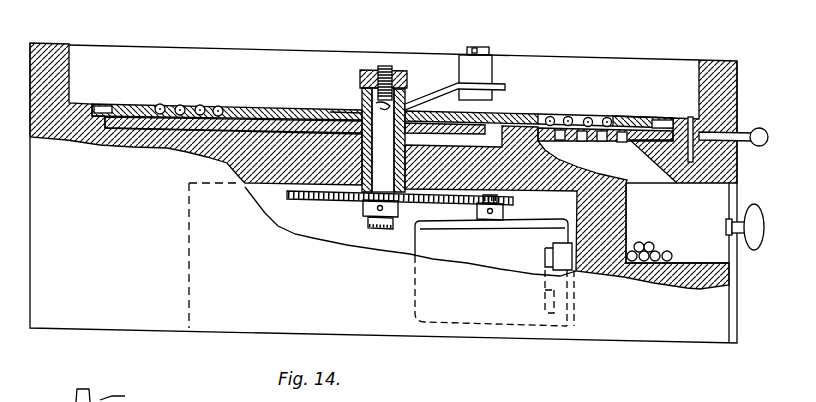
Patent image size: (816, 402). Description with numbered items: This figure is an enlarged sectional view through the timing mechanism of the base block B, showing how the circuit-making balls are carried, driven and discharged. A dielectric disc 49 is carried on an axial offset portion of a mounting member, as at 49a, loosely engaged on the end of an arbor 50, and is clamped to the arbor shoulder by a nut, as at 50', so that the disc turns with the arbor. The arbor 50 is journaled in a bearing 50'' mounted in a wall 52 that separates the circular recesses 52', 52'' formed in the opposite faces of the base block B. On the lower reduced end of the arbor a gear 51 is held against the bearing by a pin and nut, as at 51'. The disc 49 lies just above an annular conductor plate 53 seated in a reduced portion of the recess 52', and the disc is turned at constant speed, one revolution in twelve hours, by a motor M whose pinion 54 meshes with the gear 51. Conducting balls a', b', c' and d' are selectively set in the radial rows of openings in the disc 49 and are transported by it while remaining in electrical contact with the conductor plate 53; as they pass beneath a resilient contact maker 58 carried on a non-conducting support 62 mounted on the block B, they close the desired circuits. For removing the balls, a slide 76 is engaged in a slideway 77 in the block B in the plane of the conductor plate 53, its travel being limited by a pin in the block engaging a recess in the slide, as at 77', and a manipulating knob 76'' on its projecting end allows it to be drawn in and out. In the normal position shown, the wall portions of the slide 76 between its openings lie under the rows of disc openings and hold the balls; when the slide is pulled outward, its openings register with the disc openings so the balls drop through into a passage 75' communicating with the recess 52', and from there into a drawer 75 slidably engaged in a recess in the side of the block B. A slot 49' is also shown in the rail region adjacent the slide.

The base block B is at (128, 318).
The circular recess 52' is at (196, 103).
The wall 52 is at (481, 207).
The circular recess 52'' is at (214, 280).
The dielectric disc 49 is at (382, 97).
The mounting member offset portion 49a is at (365, 113).
The rail slot 49' is at (668, 101).
The annular plate 53 is at (141, 118).
The arbor 50 is at (409, 127).
The nut 50' is at (408, 63).
The bearing 50'' is at (362, 217).
The gear 51 is at (400, 212).
The pin and nut 51' is at (380, 251).
The pinion 54 is at (505, 209).
The motor M is at (494, 272).
The contact maker 58 is at (490, 85).
The support 62 is at (481, 72).
The circuit maker ball a' is at (548, 105).
The circuit maker ball b' is at (573, 105).
The circuit maker ball c' is at (594, 106).
The circuit maker ball d' is at (615, 102).
The slide 76 is at (643, 105).
The manipulating knob 76'' is at (657, 158).
The passage 75' is at (669, 121).
The drawer 75 is at (695, 223).
The slideway 77 is at (735, 118).
The pin and recess 77' is at (692, 96).